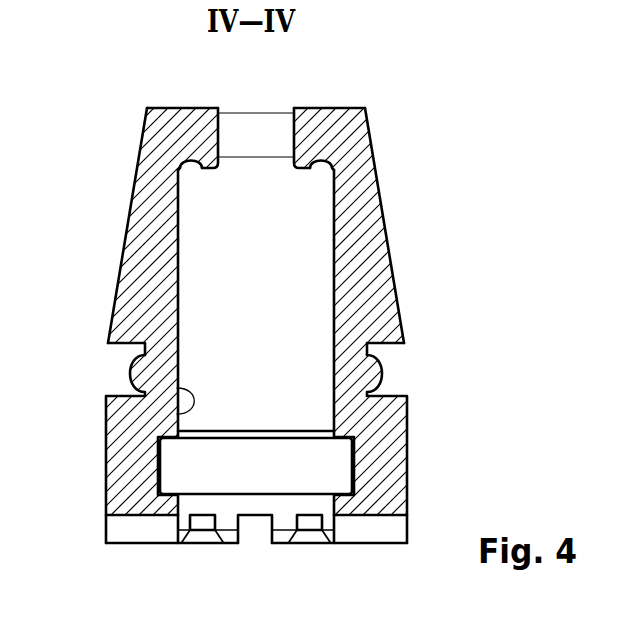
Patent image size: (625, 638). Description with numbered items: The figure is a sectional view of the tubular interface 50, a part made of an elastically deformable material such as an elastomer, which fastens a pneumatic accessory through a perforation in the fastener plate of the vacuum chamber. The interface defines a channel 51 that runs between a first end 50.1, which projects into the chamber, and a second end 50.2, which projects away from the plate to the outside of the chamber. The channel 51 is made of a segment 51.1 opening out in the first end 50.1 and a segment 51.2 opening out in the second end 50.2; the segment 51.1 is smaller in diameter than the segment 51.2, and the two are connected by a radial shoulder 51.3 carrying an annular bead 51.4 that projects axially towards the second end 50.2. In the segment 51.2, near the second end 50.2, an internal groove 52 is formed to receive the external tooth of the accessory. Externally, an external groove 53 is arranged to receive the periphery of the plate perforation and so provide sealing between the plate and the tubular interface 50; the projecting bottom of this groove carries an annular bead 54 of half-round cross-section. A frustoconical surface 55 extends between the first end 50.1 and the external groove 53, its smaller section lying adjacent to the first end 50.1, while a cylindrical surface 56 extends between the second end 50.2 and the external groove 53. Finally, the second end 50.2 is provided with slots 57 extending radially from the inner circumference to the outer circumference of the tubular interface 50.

The tubular interface 50 is at (430, 268).
The first end 50.1 is at (182, 107).
The second end 50.2 is at (145, 544).
The channel 51 is at (213, 281).
The segment 51.1 is at (290, 135).
The segment 51.2 is at (177, 420).
The radial shoulder 51.3 is at (186, 164).
The annular bead 51.4 is at (181, 201).
The internal groove 52 is at (348, 468).
The external groove 53 is at (388, 398).
The annular bead 54 is at (383, 372).
The frustoconical surface 55 is at (386, 205).
The cylindrical surface 56 is at (412, 463).
The slots 57 is at (372, 532).